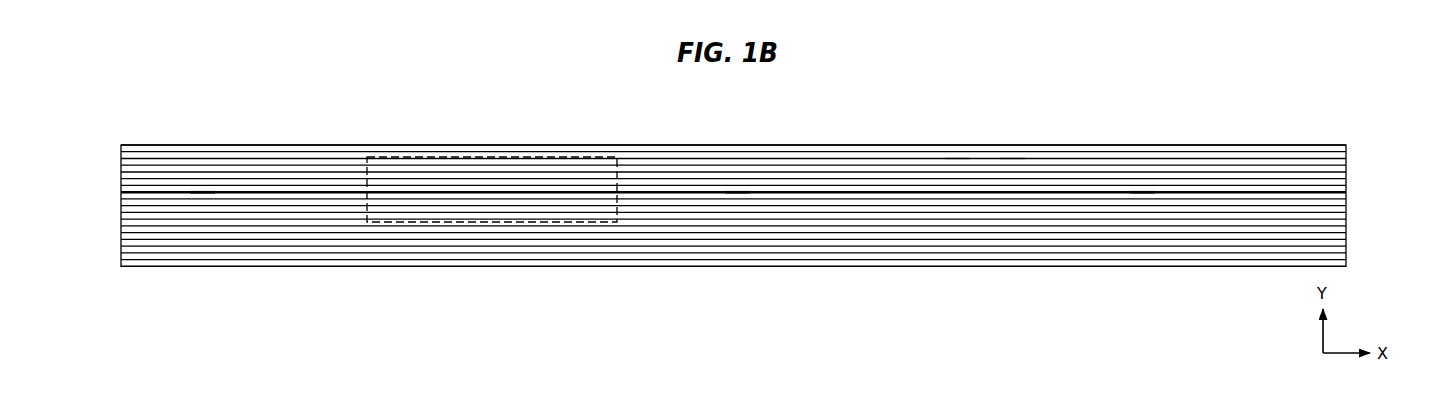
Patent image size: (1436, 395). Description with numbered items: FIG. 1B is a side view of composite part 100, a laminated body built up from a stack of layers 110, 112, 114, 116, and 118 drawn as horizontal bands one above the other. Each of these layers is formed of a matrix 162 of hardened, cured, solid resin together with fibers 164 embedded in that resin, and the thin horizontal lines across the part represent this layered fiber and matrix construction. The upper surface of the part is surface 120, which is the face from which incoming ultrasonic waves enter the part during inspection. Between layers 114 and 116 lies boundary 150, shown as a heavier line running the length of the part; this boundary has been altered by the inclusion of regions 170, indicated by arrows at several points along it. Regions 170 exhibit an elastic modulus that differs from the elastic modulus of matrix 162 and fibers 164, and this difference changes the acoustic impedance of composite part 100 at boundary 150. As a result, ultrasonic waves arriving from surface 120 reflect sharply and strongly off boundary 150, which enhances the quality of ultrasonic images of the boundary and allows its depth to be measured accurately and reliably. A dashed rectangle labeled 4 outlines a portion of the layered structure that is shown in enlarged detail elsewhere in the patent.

The composite part 100 is at (266, 287).
The detail region of FIG. 4 is at (460, 157).
The layer 110 is at (121, 256).
The layer 112 is at (121, 231).
The layer 114 is at (121, 206).
The layer 116 is at (1346, 181).
The layer 118 is at (1346, 158).
The surface 120 is at (697, 145).
The boundary 150 is at (120, 192).
The matrix 162 is at (956, 161).
The fibers 164 is at (1013, 159).
The regions 170 is at (203, 191).